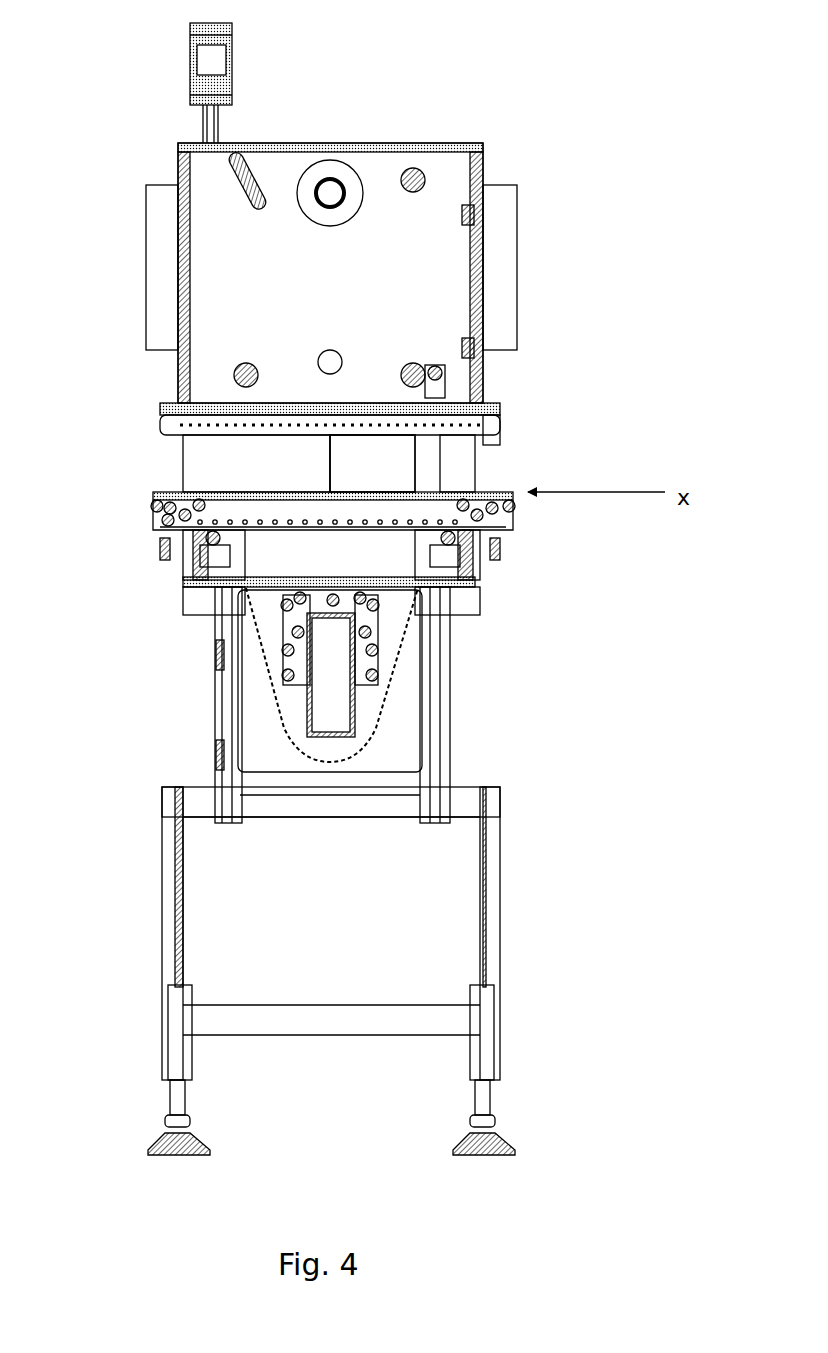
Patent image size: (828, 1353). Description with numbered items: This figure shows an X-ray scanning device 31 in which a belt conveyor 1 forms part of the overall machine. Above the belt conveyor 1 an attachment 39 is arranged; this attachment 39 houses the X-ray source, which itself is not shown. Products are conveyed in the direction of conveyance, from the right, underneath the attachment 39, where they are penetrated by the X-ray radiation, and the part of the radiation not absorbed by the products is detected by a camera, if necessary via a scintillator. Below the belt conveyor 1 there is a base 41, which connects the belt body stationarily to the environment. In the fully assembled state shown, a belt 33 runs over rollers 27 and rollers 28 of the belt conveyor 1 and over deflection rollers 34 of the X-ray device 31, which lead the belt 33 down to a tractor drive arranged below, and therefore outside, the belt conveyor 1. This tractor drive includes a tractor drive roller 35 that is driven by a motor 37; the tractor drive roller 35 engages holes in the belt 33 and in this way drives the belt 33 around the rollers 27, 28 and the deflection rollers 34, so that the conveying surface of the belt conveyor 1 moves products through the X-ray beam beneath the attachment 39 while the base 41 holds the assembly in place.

The X-ray scanning device 31 is at (473, 100).
The attachment 39 is at (483, 303).
The belt conveyor 1 is at (462, 472).
The rollers 27 is at (155, 500).
The rollers 28 is at (168, 520).
The deflection rollers 34 is at (213, 537).
The belt 33 is at (408, 607).
The motor 37 is at (382, 645).
The tractor drive roller 35 is at (362, 752).
The base 41 is at (500, 912).